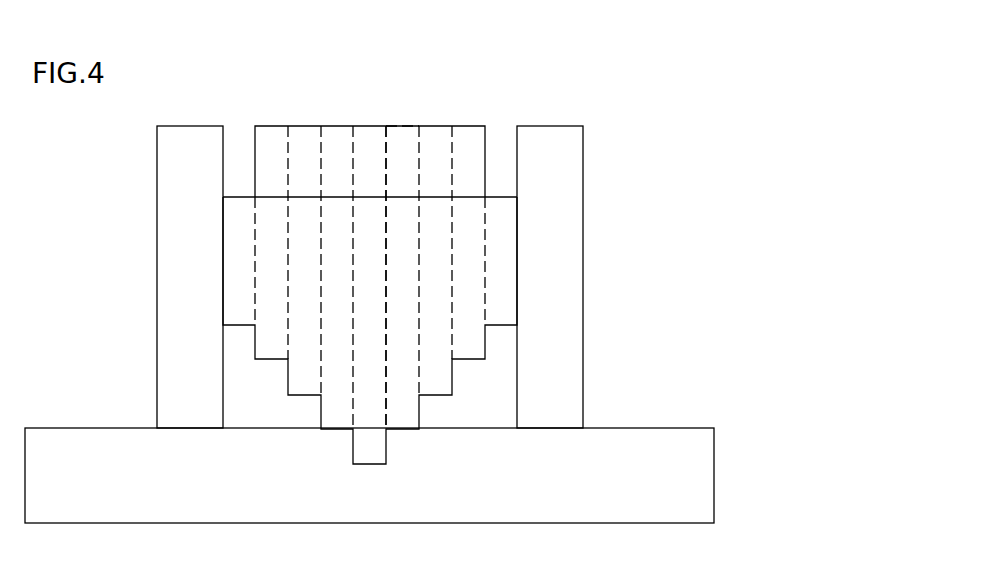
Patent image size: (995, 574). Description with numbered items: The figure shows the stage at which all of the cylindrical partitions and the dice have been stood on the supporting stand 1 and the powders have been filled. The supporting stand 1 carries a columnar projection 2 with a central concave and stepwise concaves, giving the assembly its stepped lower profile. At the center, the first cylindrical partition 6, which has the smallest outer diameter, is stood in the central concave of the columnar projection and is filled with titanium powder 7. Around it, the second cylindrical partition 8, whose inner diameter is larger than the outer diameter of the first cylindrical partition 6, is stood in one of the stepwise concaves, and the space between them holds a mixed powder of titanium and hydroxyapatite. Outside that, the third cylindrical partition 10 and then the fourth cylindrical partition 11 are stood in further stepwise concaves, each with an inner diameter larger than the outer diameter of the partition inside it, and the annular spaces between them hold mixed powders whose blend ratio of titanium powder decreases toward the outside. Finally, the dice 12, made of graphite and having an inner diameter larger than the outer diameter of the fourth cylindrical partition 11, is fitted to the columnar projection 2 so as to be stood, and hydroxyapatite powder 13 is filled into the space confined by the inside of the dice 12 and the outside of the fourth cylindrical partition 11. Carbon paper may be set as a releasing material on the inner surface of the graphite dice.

The supporting stand 1 is at (616, 447).
The columnar projection 2 is at (495, 348).
The first cylindrical partition 6 is at (377, 126).
The titanium powder 7 is at (370, 232).
The second cylindrical partition 8 is at (400, 126).
The third cylindrical partition 10 is at (442, 138).
The fourth cylindrical partition 11 is at (475, 138).
The dice 12 is at (550, 185).
The hydroxyapatite powder 13 is at (502, 279).